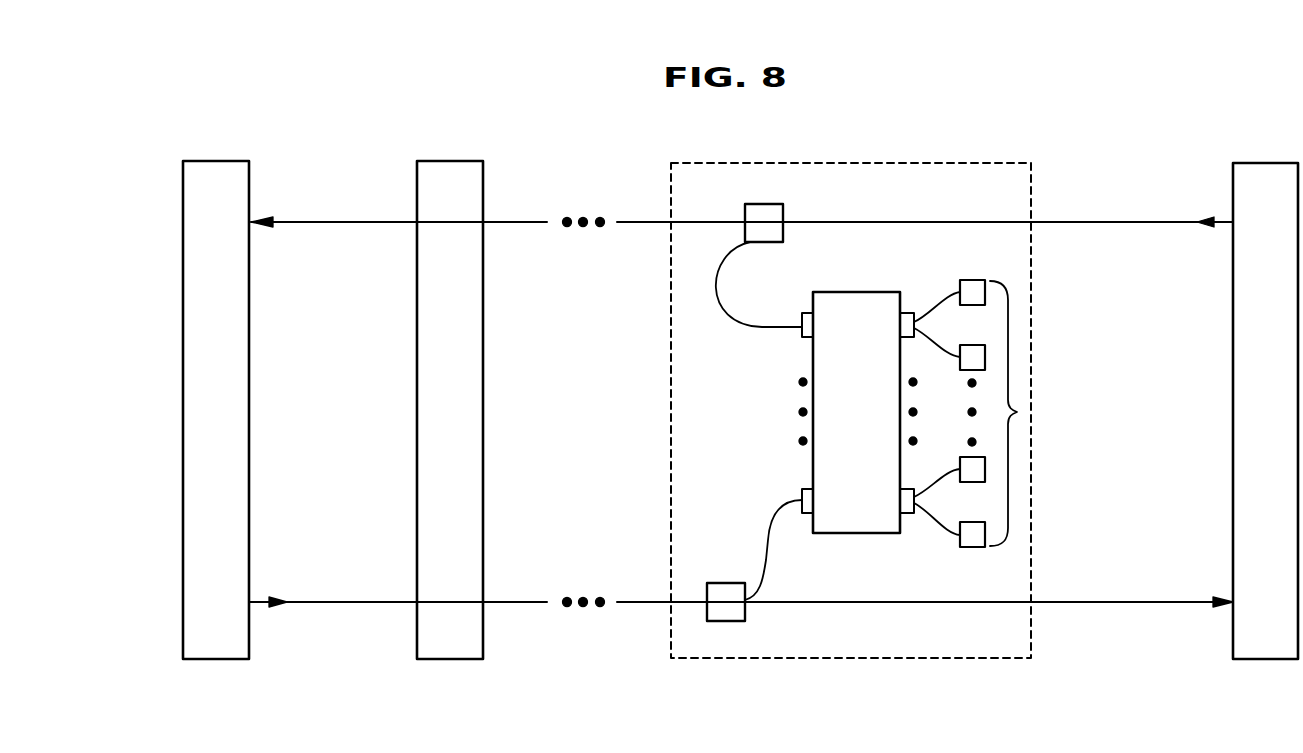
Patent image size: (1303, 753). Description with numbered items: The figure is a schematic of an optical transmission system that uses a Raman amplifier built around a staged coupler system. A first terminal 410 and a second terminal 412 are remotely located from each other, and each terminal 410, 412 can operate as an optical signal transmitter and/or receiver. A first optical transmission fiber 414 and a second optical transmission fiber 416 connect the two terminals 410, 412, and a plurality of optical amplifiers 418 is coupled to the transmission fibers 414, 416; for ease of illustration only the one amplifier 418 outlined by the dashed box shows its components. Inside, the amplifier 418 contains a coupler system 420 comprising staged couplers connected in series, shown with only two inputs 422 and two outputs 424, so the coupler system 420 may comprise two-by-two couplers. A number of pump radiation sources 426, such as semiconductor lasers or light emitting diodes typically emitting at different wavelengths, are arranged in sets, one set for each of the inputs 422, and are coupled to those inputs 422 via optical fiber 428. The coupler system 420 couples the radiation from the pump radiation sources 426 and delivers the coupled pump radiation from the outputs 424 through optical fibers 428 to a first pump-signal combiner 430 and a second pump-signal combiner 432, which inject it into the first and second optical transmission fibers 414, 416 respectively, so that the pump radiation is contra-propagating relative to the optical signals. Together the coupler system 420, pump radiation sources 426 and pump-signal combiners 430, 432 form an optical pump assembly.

The first terminal 410 is at (205, 160).
The second terminal 412 is at (1252, 162).
The first optical transmission fiber 414 is at (349, 220).
The second optical transmission fiber 416 is at (348, 600).
The optical amplifier 418 is at (440, 160).
The coupler system 420 is at (870, 534).
The inputs 422 is at (910, 313).
The outputs 424 is at (807, 313).
The pump radiation sources 426 is at (1017, 412).
The optical fiber 428 is at (958, 283).
The first pump-signal combiner 430 is at (750, 205).
The second pump-signal combiner 432 is at (745, 621).